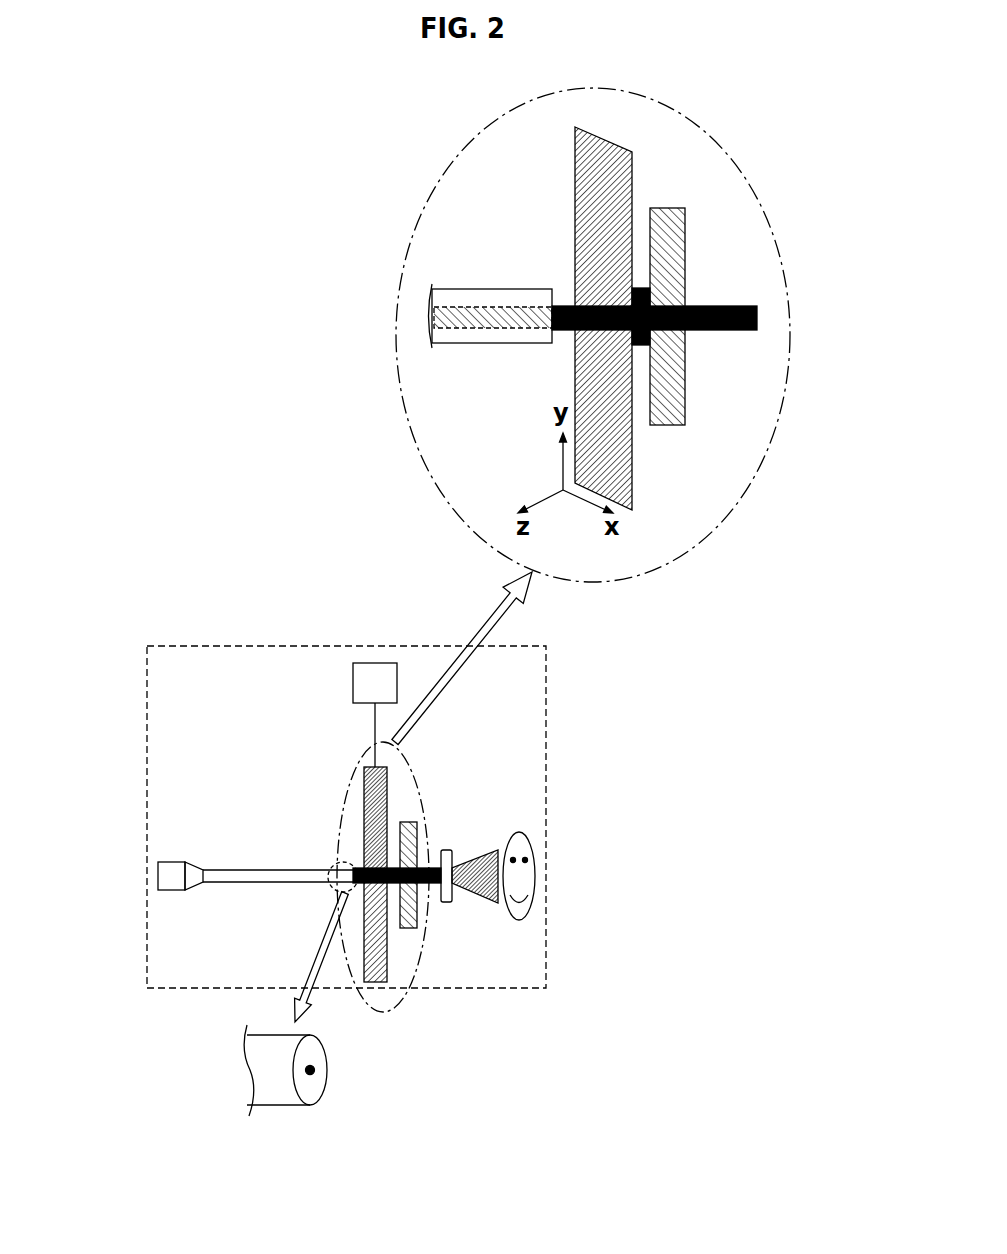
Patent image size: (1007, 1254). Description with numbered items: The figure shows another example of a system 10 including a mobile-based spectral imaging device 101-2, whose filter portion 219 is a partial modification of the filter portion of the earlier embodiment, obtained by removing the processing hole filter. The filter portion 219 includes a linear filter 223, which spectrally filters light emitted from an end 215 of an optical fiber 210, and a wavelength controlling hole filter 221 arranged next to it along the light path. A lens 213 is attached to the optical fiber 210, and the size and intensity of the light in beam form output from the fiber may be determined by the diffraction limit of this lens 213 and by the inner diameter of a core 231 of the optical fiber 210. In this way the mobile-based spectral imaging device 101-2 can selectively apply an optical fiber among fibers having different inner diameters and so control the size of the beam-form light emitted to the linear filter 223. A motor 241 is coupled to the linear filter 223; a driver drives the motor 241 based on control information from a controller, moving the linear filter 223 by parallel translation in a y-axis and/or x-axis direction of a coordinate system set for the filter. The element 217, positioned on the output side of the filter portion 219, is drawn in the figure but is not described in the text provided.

The optical imaging system 10 is at (200, 292).
The mobile-based spectral imaging device 101-2 is at (190, 640).
The motor 241 is at (353, 683).
The lens 213 is at (178, 860).
The optical fiber 210 is at (250, 868).
The end of the optical fiber 215 is at (328, 860).
The lens 217 is at (448, 905).
The filter portion 219 is at (428, 800).
The wavelength controlling hole filter 221 is at (672, 378).
The linear filter 223 is at (620, 452).
The core of the optical fiber 231 is at (319, 1070).